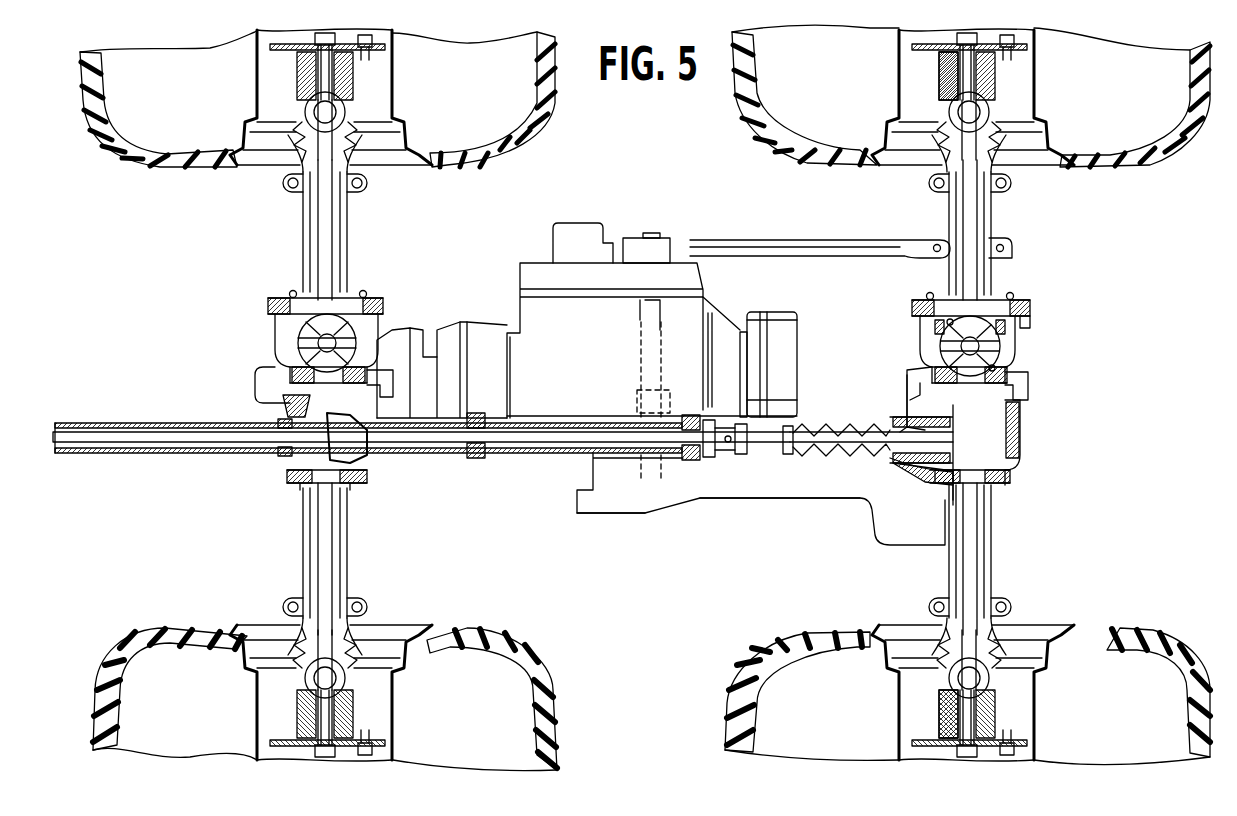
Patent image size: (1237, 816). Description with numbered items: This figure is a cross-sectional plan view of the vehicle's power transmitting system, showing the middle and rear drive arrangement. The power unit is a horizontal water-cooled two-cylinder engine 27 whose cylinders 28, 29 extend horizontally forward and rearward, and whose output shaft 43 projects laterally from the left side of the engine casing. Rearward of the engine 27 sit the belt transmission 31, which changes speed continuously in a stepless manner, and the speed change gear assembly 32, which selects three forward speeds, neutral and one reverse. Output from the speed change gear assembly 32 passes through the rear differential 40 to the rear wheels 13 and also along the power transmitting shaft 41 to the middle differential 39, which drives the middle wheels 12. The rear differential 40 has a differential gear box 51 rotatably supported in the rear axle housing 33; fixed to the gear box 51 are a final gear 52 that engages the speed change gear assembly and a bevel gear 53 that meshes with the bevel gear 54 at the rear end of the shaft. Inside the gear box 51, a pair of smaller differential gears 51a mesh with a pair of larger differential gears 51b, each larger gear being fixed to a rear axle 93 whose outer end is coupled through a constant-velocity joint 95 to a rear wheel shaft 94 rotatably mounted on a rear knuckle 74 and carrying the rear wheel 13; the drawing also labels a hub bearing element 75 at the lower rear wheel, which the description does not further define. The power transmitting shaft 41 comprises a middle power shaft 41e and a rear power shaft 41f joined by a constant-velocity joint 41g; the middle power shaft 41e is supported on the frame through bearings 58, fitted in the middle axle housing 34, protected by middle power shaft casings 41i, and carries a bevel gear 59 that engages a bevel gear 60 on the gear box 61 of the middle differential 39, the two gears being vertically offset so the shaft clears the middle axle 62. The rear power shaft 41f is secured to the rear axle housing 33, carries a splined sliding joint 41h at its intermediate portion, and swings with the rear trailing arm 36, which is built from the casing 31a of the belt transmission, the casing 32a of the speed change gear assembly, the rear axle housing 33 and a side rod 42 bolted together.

The middle wheels 12 is at (545, 128).
The rear wheels 13 is at (1155, 165).
The engine 27 is at (520, 318).
The cylinder 28 is at (452, 340).
The cylinder 29 is at (780, 327).
The belt transmission 31 is at (773, 532).
The casing of the belt transmission 31a is at (838, 500).
The speed change gear assembly 32 is at (905, 356).
The casing of the speed change gear assembly 32a is at (915, 386).
The rear axle housing 33 is at (1012, 291).
The middle axle housing 34 is at (370, 259).
The rear trailing arm 36 is at (684, 570).
The middle differential 39 is at (262, 353).
The rear differential 40 is at (1020, 346).
The power transmitting shaft 41 is at (135, 458).
The middle power shaft 41e is at (526, 440).
The rear power shaft 41f is at (918, 447).
The constant-velocity joint 41g is at (731, 458).
The splined sliding joint 41h is at (836, 426).
The middle power shaft casings 41i is at (92, 423).
The side rod 42 is at (720, 245).
The output shaft 43 is at (656, 480).
The differential gear box 51 is at (1000, 356).
The smaller differential gears 51a is at (938, 336).
The larger differential gears 51b is at (948, 320).
The final gear 52 is at (1014, 406).
The bevel gear 53 is at (1006, 442).
The bevel gear 54 is at (946, 468).
The bearings 58 is at (472, 458).
The bevel gear 59 is at (290, 408).
The bevel gear 60 is at (343, 412).
The gear box 61 is at (300, 322).
The middle axle 62 is at (320, 212).
The rear knuckles 74 is at (946, 78).
The wheel bearing 75 is at (945, 712).
The rear axle 93 is at (968, 209).
The rear wheel shafts 94 is at (963, 55).
The constant-velocity joints 95 is at (978, 111).